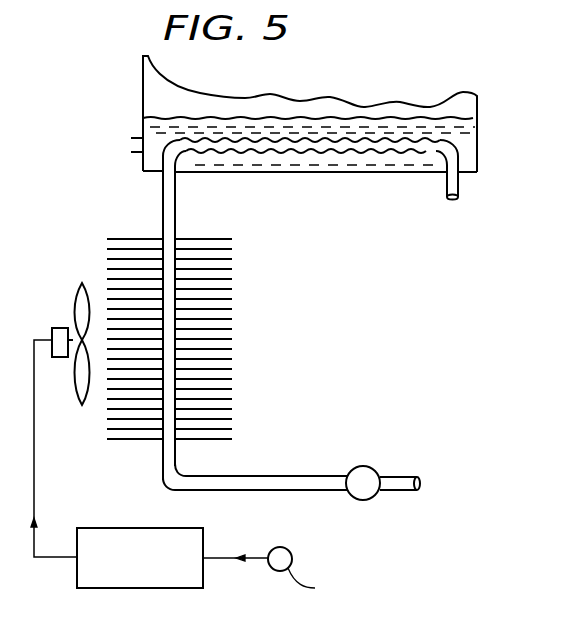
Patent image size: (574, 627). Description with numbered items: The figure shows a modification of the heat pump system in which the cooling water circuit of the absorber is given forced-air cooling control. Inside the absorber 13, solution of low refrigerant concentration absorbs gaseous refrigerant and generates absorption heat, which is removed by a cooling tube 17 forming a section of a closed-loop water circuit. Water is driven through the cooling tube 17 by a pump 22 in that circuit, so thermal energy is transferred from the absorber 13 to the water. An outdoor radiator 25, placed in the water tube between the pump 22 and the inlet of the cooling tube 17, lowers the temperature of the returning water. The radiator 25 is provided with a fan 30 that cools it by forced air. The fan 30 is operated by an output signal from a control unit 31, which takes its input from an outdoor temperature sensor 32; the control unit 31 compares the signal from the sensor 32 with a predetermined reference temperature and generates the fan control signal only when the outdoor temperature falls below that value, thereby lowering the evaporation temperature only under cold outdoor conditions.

The absorber 13 is at (470, 134).
The cooling tube 17 is at (452, 162).
The outdoor radiator 25 is at (234, 285).
The pump 22 is at (360, 466).
The fan 30 is at (57, 307).
The control unit 31 is at (118, 528).
The outdoor temperature sensor 32 is at (283, 547).